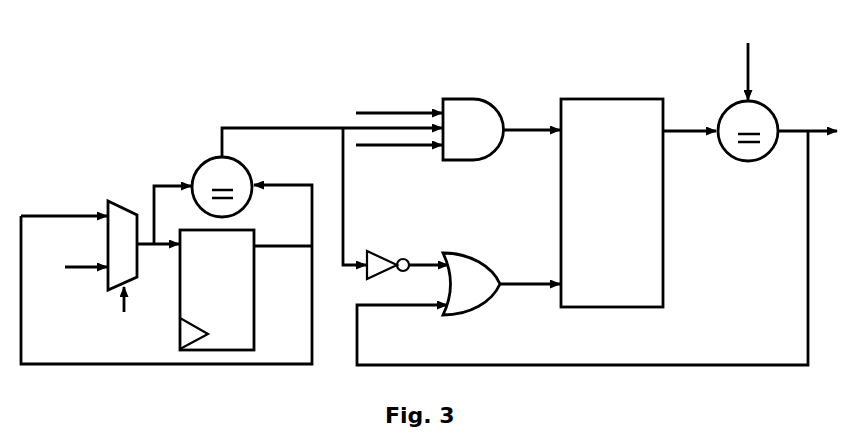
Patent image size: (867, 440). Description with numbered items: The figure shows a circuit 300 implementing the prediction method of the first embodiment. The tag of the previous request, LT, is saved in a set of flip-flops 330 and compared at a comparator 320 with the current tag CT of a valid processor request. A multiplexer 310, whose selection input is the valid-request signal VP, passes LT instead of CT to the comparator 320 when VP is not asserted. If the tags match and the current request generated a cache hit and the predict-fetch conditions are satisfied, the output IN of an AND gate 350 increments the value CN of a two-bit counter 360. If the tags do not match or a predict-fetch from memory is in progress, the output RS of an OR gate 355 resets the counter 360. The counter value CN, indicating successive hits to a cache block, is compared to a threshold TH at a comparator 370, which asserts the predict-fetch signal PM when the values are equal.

The circuit 300 is at (121, 83).
The multiplexer 310 is at (106, 199).
The comparator 320 is at (204, 154).
The set of flip-flops 330 is at (217, 290).
The AND gate 350 is at (473, 129).
The OR gate 355 is at (433, 283).
The 2-bit counter 360 is at (612, 203).
The comparator 370 is at (732, 163).